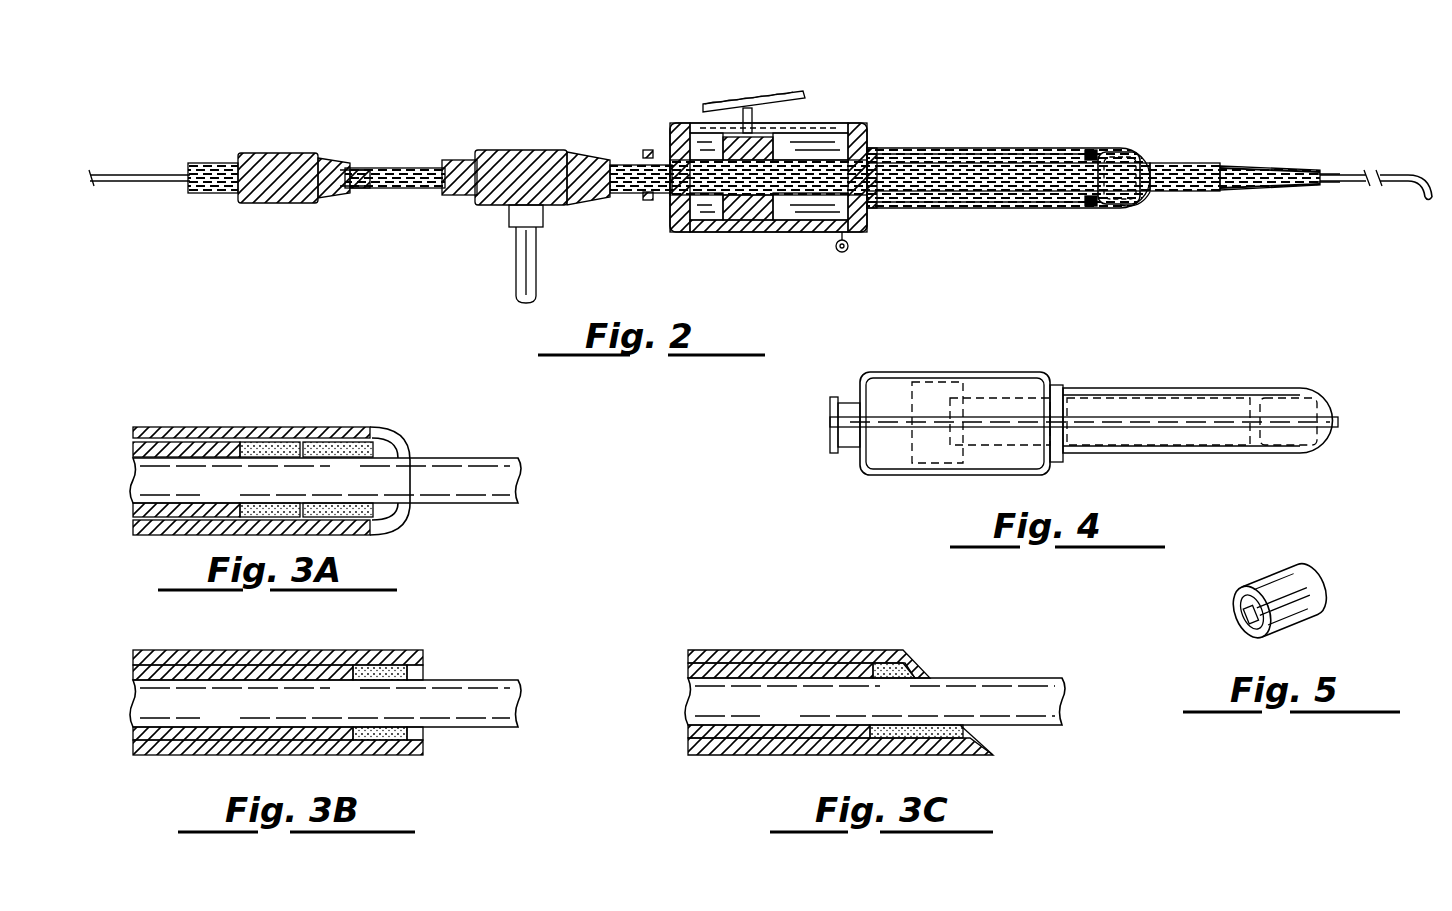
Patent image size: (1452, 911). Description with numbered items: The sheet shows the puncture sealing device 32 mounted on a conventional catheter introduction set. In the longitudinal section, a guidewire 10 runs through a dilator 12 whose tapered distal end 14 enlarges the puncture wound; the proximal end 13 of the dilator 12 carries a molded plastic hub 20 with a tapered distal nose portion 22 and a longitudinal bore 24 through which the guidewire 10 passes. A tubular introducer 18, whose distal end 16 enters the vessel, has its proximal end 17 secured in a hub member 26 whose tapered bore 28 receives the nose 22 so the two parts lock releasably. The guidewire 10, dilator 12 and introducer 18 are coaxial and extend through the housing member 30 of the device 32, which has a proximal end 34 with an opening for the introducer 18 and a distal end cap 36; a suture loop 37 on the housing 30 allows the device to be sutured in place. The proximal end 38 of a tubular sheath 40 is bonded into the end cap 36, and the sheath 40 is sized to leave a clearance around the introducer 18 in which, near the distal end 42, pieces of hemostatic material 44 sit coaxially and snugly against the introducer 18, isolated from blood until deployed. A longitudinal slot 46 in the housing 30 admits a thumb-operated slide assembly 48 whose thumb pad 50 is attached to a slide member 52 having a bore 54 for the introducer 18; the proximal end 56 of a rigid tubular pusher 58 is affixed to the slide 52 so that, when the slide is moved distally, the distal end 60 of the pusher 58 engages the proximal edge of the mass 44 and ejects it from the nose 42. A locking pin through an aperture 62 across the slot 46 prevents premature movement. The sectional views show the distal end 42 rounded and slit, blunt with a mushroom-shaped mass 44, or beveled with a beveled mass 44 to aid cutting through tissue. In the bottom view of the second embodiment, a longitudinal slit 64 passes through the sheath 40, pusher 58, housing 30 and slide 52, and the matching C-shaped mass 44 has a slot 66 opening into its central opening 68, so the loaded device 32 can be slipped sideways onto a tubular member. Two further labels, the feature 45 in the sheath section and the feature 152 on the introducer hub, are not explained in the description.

In FIG. 2, the guidewire 10 is at (160, 176).
In FIG. 2, the dilator 12 is at (410, 168).
In FIG. 2, the proximal end of the dilator 13 is at (358, 168).
In FIG. 2, the tapered distal end of the dilator 14 is at (1315, 176).
In FIG. 2, the distal end of the tubular introducer 16 is at (1220, 168).
In FIG. 2, the proximal end of the tubular introducer 17 is at (597, 195).
In FIG. 2, the tubular introducer 18 is at (625, 165).
In FIG. 3A, the tubular introducer 18 is at (500, 460).
In FIG. 3B, the tubular introducer 18 is at (515, 682).
In FIG. 3C, the tubular introducer 18 is at (1050, 680).
In FIG. 2, the molded plastic hub 20 is at (269, 172).
In FIG. 2, the tapered distal nose portion 22 is at (352, 195).
In FIG. 2, the longitudinal bore 24 is at (268, 153).
In FIG. 2, the hub member 26 is at (516, 163).
In FIG. 2, the tapered bore 28 is at (460, 152).
In FIG. 2, the housing member 30 is at (749, 149).
In FIG. 4, the housing member 30 is at (946, 423).
In FIG. 2, the puncture sealing device 32 is at (1036, 161).
In FIG. 4, the puncture sealing device 32 is at (1099, 416).
In FIG. 2, the proximal end of the housing 34 is at (690, 126).
In FIG. 2, the distal end cap 36 is at (855, 125).
In FIG. 2, the suture loop 37 is at (848, 250).
In FIG. 2, the proximal end of the tubular sheath 38 is at (872, 210).
In FIG. 2, the tubular sheath 40 is at (935, 150).
In FIG. 3A, the tubular sheath 40 is at (276, 453).
In FIG. 3B, the tubular sheath 40 is at (293, 679).
In FIG. 3C, the tubular sheath 40 is at (825, 678).
In FIG. 4, the tubular sheath 40 is at (1216, 418).
In FIG. 2, the distal end of the sheath 42 is at (1135, 200).
In FIG. 2, the hemostatic mass 44 is at (1110, 150).
In FIG. 3A, the hemostatic mass 44 is at (390, 440).
In FIG. 3B, the hemostatic mass 44 is at (420, 668).
In FIG. 3C, the hemostatic mass 44 is at (915, 680).
In FIG. 4, the hemostatic mass 44 is at (1295, 400).
In FIG. 5, the hemostatic mass 44 is at (1274, 594).
In FIG. 3A, the gripping surface 45 is at (275, 445).
In FIG. 2, the longitudinal slot 46 is at (705, 128).
In FIG. 2, the slide assembly 48 is at (763, 70).
In FIG. 2, the thumb pad 50 is at (790, 94).
In FIG. 2, the slide member 52 is at (745, 220).
In FIG. 4, the slide member 52 is at (930, 465).
In FIG. 2, the bore 54 is at (705, 220).
In FIG. 2, the proximal end of the tubular pusher 56 is at (775, 220).
In FIG. 2, the tubular pusher 58 is at (1010, 208).
In FIG. 3A, the tubular pusher 58 is at (195, 445).
In FIG. 3B, the tubular pusher 58 is at (225, 667).
In FIG. 3C, the tubular pusher 58 is at (760, 665).
In FIG. 4, the tubular pusher 58 is at (1160, 450).
In FIG. 2, the distal end of the tubular pusher 60 is at (1090, 152).
In FIG. 2, the aperture 62 is at (742, 92).
In FIG. 4, the longitudinal slit 64 is at (1120, 423).
In FIG. 5, the slot 66 is at (1300, 600).
In FIG. 5, the central opening 68 is at (1245, 612).
In FIG. 2, the side port 152 is at (516, 270).